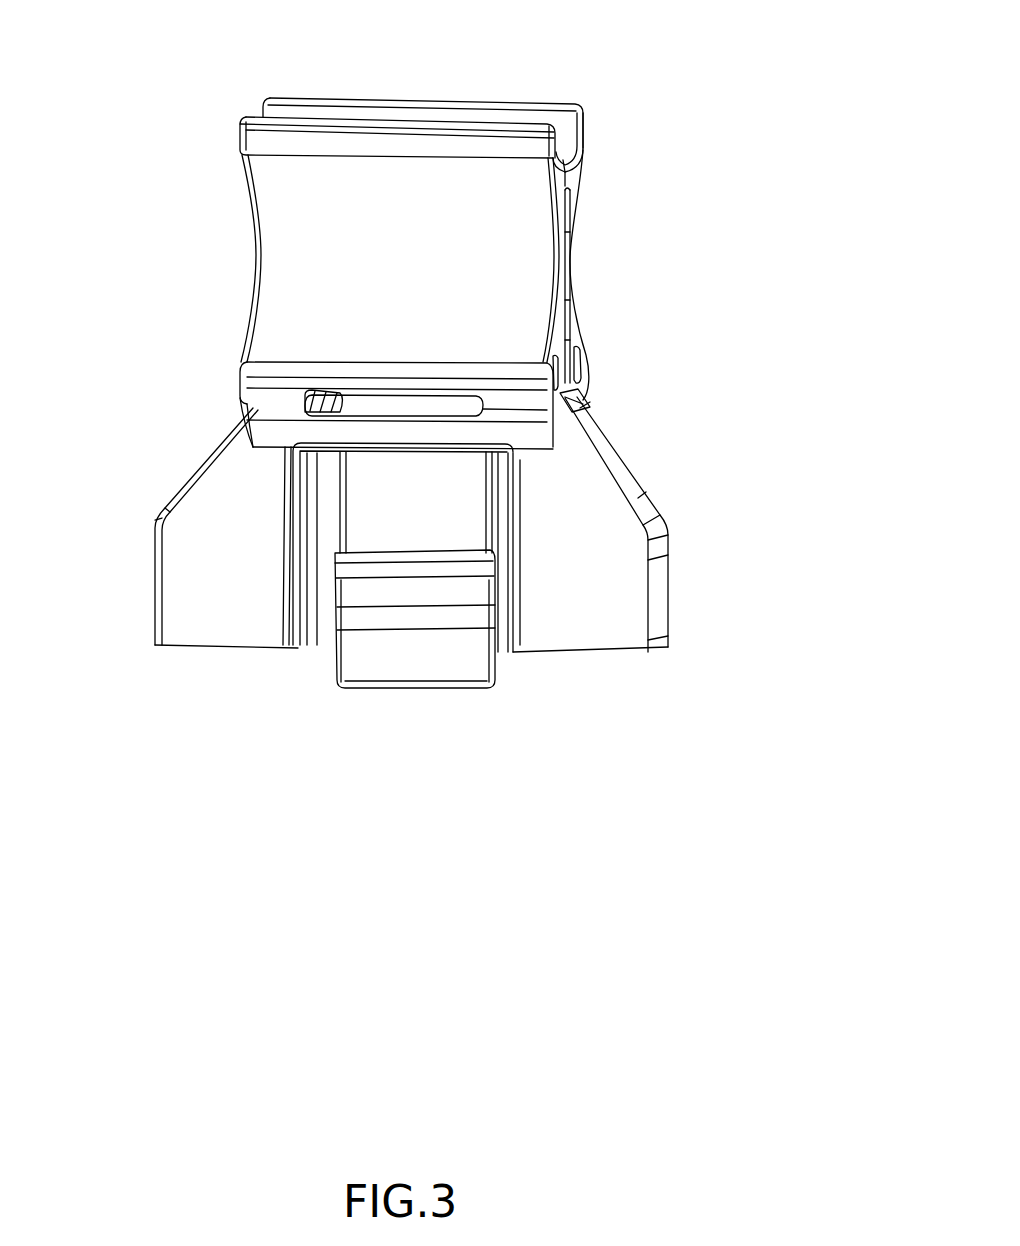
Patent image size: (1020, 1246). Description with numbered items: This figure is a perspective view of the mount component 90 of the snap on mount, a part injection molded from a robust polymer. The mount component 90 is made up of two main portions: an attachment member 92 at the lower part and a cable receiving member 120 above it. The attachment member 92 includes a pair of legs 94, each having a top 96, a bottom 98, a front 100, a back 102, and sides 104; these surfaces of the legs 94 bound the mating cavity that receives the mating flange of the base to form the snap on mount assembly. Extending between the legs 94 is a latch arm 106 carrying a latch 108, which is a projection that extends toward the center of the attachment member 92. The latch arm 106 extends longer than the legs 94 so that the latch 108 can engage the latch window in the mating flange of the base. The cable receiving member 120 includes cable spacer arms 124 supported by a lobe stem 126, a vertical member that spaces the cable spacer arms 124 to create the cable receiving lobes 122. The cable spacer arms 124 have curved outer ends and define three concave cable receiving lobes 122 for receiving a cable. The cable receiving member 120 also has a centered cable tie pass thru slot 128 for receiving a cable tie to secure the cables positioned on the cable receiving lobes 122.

The mount component 90 is at (252, 245).
The attachment member 92 is at (158, 510).
The legs 94 is at (208, 618).
The top 96 is at (588, 410).
The bottom 98 is at (628, 657).
The front 100 is at (570, 632).
The back 102 is at (647, 581).
The sides 104 is at (625, 463).
The latch arm 106 is at (369, 609).
The latch 108 is at (387, 562).
The cable receiving member 120 is at (568, 178).
The cable receiving lobes 122 is at (564, 123).
The cable spacer arms 124 is at (585, 120).
The lobe stem 126 is at (569, 253).
The cable tie pass thru slot 128 is at (372, 398).